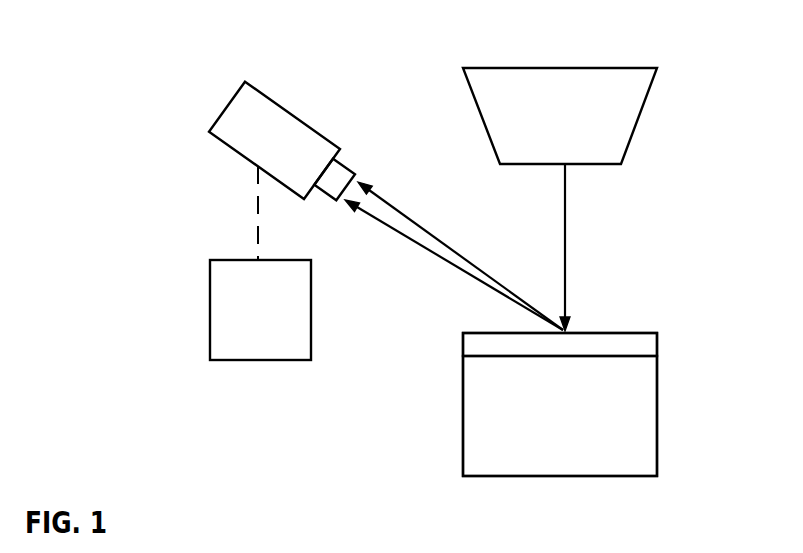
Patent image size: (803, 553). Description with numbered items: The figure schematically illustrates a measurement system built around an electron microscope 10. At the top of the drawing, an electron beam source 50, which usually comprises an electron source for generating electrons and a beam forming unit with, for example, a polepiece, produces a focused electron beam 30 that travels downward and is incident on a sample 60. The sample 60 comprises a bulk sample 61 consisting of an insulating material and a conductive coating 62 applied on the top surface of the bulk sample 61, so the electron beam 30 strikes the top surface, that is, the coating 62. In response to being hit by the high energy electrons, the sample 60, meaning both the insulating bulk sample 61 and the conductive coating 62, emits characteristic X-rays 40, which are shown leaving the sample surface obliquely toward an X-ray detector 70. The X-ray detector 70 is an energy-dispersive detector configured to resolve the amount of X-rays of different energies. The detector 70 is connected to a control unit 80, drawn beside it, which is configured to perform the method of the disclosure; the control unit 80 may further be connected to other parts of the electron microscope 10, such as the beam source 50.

The electron microscope 10 is at (360, 43).
The electron beam 30 is at (567, 232).
The characteristic X-rays 40 is at (400, 228).
The electron beam source 50 is at (547, 126).
The sample 60 is at (452, 333).
The bulk sample 61 is at (544, 416).
The conductive coating 62 is at (672, 335).
The X-ray detector 70 is at (258, 146).
The control unit 80 is at (246, 322).